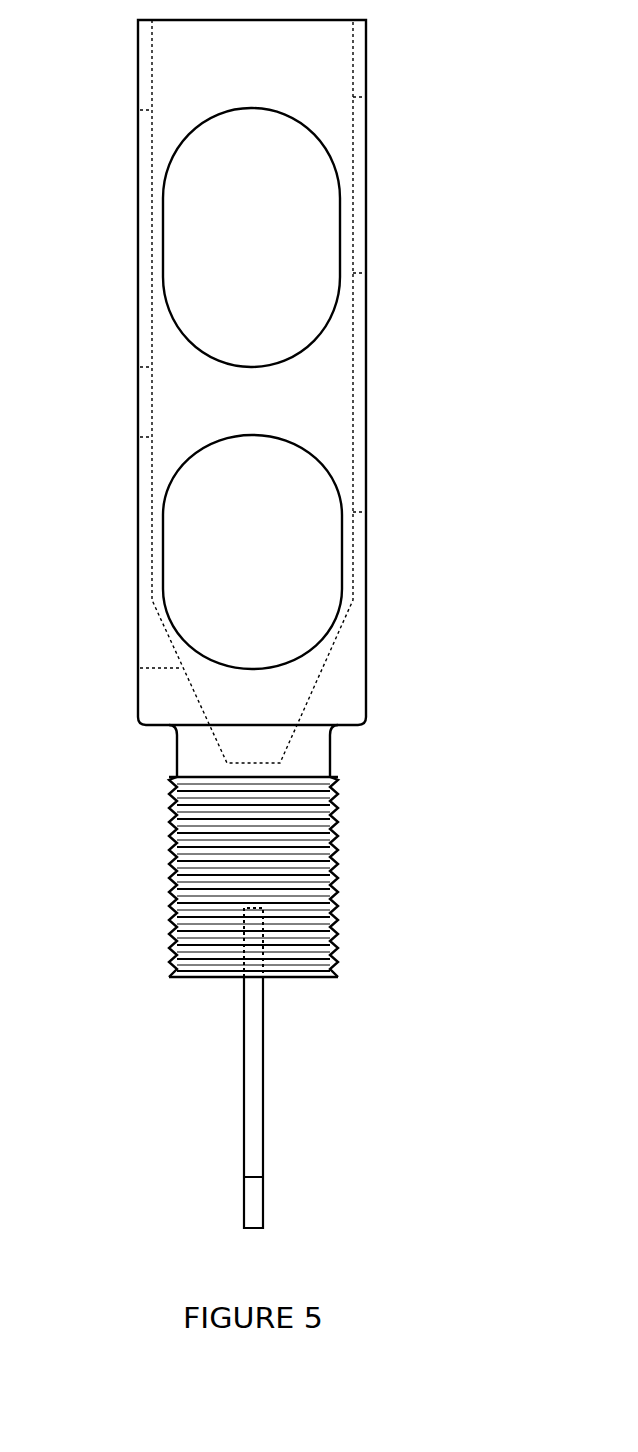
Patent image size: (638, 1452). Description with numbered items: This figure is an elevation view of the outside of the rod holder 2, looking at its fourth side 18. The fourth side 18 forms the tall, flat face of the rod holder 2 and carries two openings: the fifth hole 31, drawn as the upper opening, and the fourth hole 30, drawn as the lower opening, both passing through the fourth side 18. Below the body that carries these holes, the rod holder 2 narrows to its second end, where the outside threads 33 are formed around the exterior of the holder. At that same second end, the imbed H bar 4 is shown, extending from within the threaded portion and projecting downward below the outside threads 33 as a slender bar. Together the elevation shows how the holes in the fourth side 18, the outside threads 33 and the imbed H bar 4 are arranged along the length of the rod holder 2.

The rod holder 2 is at (367, 648).
The imbed H bar 4 is at (263, 1095).
The fourth side 18 is at (283, 391).
The fourth hole 30 is at (317, 462).
The fifth hole 31 is at (325, 143).
The outside threads 33 is at (340, 857).